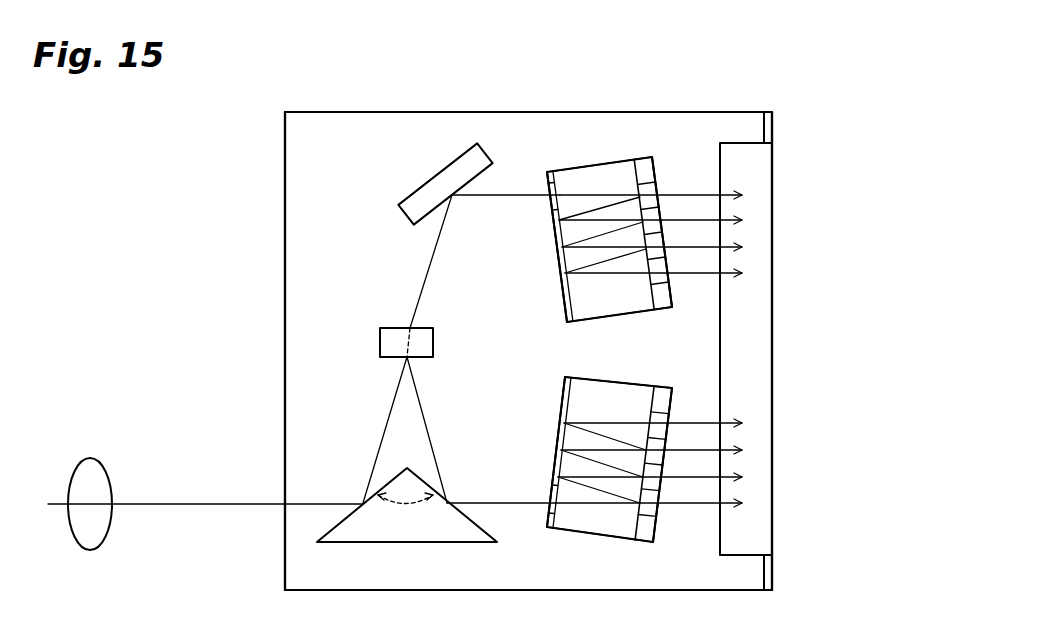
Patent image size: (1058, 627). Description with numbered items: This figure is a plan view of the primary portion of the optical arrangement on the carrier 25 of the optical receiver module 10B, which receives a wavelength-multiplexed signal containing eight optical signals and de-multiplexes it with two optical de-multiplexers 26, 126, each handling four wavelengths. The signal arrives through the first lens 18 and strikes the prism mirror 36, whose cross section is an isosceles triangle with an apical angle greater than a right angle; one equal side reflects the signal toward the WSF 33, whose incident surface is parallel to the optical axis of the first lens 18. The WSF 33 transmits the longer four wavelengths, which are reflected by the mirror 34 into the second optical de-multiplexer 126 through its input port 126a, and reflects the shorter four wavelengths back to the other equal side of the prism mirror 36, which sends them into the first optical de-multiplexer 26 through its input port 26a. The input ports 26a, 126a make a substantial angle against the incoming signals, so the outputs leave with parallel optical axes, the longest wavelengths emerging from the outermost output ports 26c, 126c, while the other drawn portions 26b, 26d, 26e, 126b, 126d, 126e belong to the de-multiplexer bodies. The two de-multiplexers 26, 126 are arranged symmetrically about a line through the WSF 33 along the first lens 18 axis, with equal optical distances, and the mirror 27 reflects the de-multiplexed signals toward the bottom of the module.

The optical receiver module 10B is at (718, 77).
The carrier 25 is at (332, 140).
The mirror 27 is at (758, 355).
The first lens 18 is at (91, 460).
The mirror 34 is at (417, 196).
The WSF 33 is at (383, 343).
The prism mirror 36 is at (383, 545).
The second optical de-multiplexer 126 is at (572, 177).
The input port 126a is at (538, 210).
The filter elements of upper demultiplexer 126b is at (646, 260).
The outermost output port 126c is at (667, 260).
The mirror segments of upper demultiplexer 126d is at (557, 262).
The transparent body of upper demultiplexer 126e is at (635, 300).
The first optical de-multiplexer 26 is at (590, 525).
The input port 26a is at (552, 500).
The filter elements of lower demultiplexer 26b is at (643, 490).
The outermost output port 26c is at (560, 425).
The transmission side of lower demultiplexer 26d is at (670, 414).
The transparent body of lower demultiplexer 26e is at (590, 385).